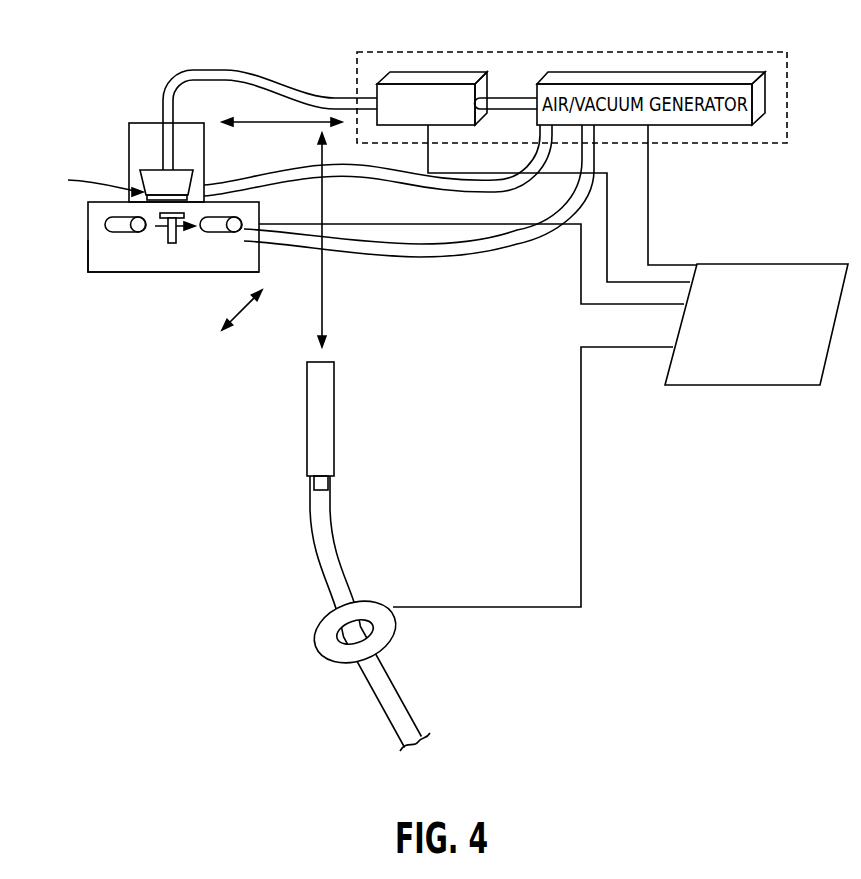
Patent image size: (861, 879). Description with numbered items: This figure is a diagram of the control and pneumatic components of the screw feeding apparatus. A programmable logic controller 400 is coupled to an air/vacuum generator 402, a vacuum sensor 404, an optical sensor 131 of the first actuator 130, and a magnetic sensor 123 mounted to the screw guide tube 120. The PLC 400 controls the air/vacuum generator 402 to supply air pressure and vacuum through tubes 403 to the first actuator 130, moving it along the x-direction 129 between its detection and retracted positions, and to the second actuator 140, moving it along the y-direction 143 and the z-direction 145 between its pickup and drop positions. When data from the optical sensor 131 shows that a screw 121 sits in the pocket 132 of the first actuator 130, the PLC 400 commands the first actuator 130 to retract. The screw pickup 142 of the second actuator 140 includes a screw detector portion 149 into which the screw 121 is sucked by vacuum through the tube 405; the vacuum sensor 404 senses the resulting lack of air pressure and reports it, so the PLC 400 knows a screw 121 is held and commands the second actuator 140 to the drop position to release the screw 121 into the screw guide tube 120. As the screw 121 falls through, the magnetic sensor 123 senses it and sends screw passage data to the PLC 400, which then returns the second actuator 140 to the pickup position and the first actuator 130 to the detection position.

The screw guide tube 120 is at (307, 423).
The screw 121 is at (171, 244).
The magnetic sensor 123 is at (313, 652).
The x-direction 129 is at (248, 309).
The first actuator 130 is at (88, 212).
The optical sensor 131 is at (105, 225).
The pocket 132 is at (88, 266).
The second actuator 140 is at (143, 123).
The screw pickup 142 is at (140, 185).
The y-direction 143 is at (282, 126).
The z-direction 145 is at (341, 240).
The screw detector portion 149 is at (90, 181).
The programmable logic controller 400 is at (740, 385).
The air/vacuum generator 402 is at (715, 72).
The tubes 403 is at (372, 178).
The vacuum sensor 404 is at (453, 72).
The tube 405 is at (240, 70).